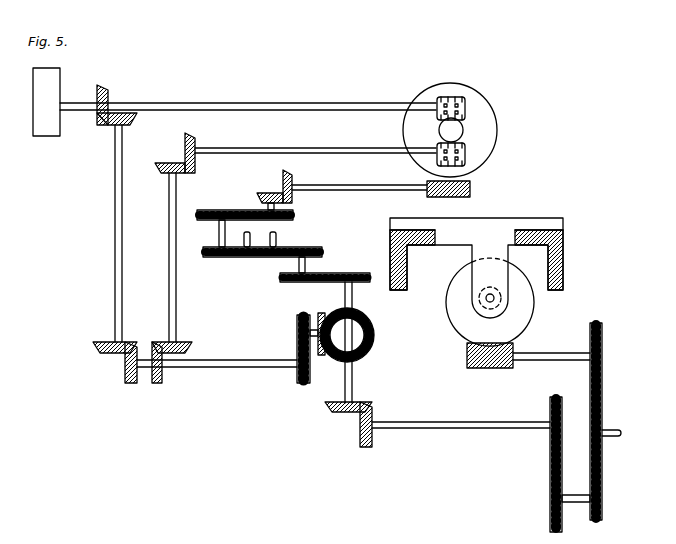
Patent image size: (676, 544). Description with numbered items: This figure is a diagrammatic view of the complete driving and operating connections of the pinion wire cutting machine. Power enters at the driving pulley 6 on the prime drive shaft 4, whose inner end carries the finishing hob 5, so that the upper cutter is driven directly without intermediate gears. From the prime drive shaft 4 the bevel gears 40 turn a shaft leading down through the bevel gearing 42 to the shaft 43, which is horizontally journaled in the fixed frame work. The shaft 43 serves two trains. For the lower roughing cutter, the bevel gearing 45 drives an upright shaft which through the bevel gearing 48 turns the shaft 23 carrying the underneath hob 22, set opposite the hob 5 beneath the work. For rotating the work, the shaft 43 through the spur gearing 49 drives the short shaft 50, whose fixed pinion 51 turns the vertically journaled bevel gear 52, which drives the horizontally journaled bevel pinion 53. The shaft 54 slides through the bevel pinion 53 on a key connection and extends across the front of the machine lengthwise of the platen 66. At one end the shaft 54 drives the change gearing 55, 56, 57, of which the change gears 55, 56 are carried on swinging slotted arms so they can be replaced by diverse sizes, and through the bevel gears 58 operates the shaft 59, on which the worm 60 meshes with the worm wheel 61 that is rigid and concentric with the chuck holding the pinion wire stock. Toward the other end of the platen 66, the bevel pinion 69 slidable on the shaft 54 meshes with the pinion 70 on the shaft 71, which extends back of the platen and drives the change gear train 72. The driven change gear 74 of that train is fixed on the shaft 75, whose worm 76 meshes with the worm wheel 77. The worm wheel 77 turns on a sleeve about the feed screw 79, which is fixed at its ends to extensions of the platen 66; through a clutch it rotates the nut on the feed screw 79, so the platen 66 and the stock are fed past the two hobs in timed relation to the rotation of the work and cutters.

The prime drive shaft 4 is at (205, 103).
The hob 5 is at (465, 103).
The driving pulley 6 is at (48, 137).
The hob 22 is at (465, 152).
The shaft 23 is at (293, 142).
The bevel gears 40 is at (117, 213).
The bevel gearing 42 is at (125, 360).
The shaft 43 is at (240, 367).
The bevel gearing 45 is at (155, 342).
The bevel gearing 48 is at (195, 172).
The spur gearing 49 is at (297, 345).
The short shaft 50 is at (314, 336).
The pinion 51 is at (321, 313).
The bevel gear 52 is at (374, 335).
The bevel pinion 53 is at (366, 312).
The shaft 54 is at (352, 375).
The change gear 55 is at (334, 268).
The change gear 56 is at (257, 257).
The change gear 57 is at (250, 210).
The bevel gears 58 is at (292, 203).
The shaft 59 is at (362, 190).
The worm 60 is at (448, 197).
The worm wheel 61 is at (483, 163).
The platen 66 is at (548, 218).
The bevel pinion 69 is at (332, 412).
The pinion 70 is at (366, 447).
The shaft 71 is at (470, 428).
The change gear train 72 is at (602, 462).
The driven change gear 74 is at (602, 365).
The shaft 75 is at (560, 360).
The worm 76 is at (490, 368).
The worm wheel 77 is at (524, 322).
The feed screw 79 is at (494, 296).